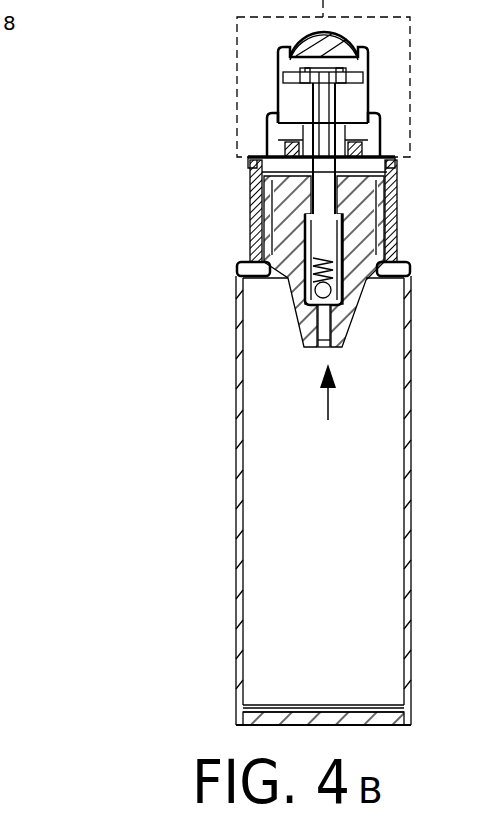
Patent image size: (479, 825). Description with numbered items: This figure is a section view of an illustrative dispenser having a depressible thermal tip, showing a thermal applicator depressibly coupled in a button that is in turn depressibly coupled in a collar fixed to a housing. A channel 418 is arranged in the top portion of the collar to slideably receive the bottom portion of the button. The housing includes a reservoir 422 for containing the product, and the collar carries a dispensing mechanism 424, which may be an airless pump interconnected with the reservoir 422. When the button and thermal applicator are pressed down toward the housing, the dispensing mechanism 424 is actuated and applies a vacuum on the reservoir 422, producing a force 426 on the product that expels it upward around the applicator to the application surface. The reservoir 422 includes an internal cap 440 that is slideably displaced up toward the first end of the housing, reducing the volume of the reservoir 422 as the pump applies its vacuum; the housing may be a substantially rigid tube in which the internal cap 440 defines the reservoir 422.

The channel 418 is at (268, 125).
The dispensing mechanism 424 is at (236, 708).
The reservoir 422 is at (77, 485).
The force 426 is at (328, 420).
The internal cap 440 is at (365, 705).